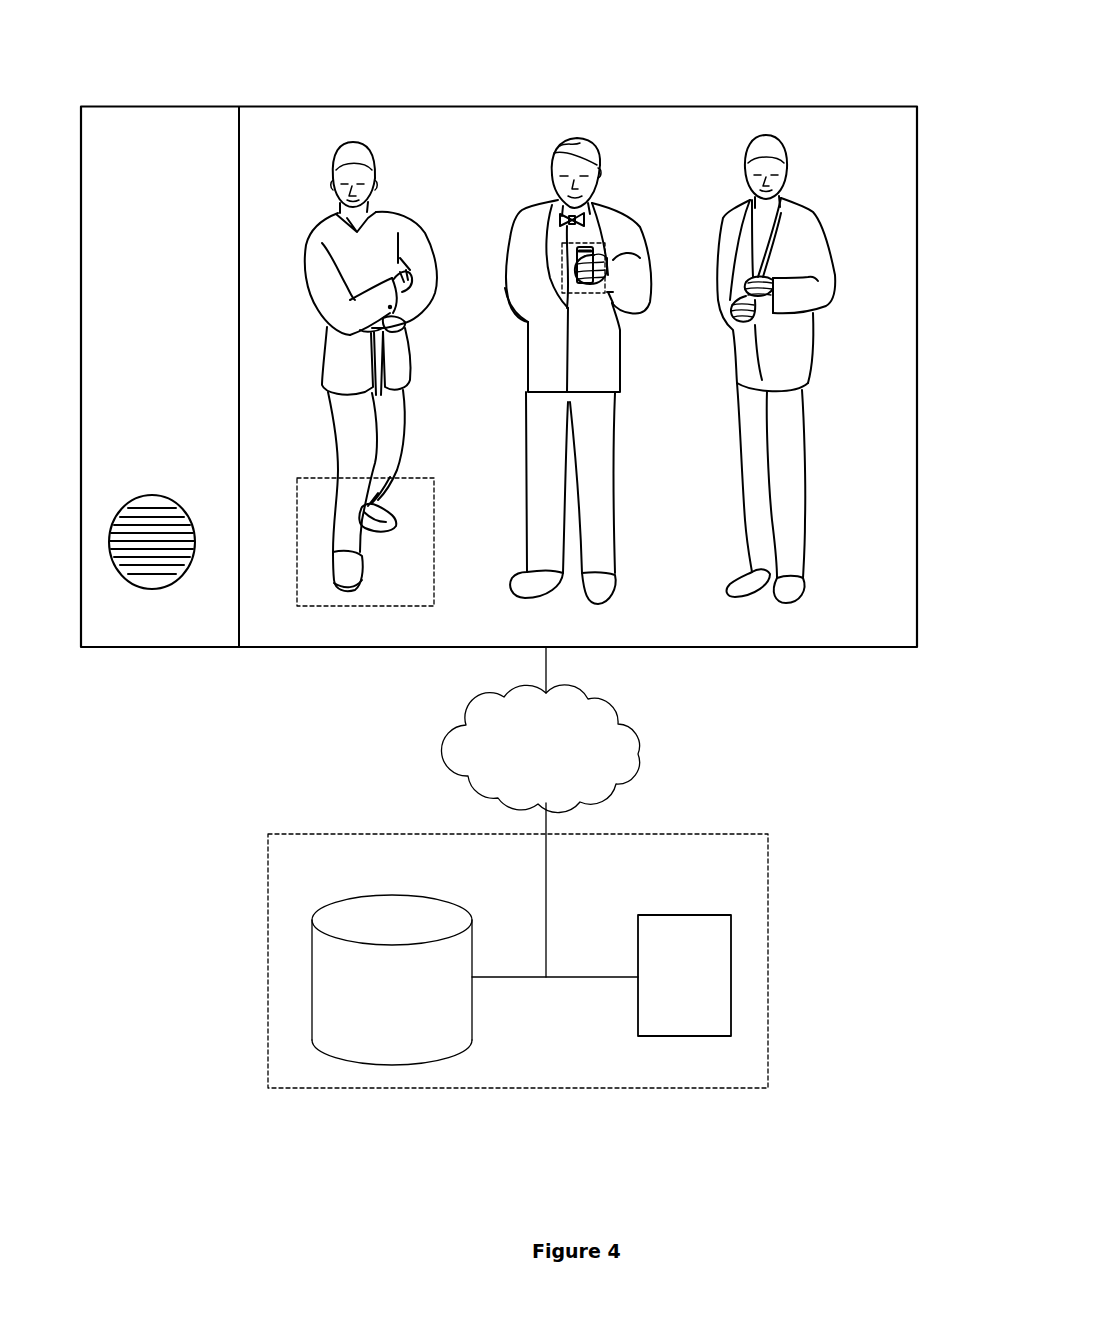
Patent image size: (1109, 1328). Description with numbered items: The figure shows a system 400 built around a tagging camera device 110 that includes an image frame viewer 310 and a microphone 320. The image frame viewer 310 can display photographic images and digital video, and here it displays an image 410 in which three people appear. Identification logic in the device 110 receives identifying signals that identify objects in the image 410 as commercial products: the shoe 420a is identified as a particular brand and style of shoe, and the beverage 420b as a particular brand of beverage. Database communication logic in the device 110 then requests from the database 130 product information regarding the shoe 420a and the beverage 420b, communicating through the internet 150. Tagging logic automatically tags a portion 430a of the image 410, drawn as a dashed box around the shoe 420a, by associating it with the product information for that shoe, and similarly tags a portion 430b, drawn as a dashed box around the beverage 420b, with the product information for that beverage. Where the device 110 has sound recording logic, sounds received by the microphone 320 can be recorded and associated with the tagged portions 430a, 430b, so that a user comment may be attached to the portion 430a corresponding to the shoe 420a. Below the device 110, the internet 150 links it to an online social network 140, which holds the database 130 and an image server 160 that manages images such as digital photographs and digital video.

The system 400 is at (558, 85).
The device 110 is at (136, 182).
The microphone 320 is at (126, 498).
The image frame viewer 310 is at (838, 647).
The image 410 is at (367, 620).
The portion 430a is at (434, 542).
The shoe 420a is at (355, 560).
The portion 430b is at (604, 248).
The beverage 420b is at (583, 255).
The internet 150 is at (531, 779).
The online social network 140 is at (740, 835).
The database 130 is at (375, 1026).
The image server 160 is at (667, 1007).